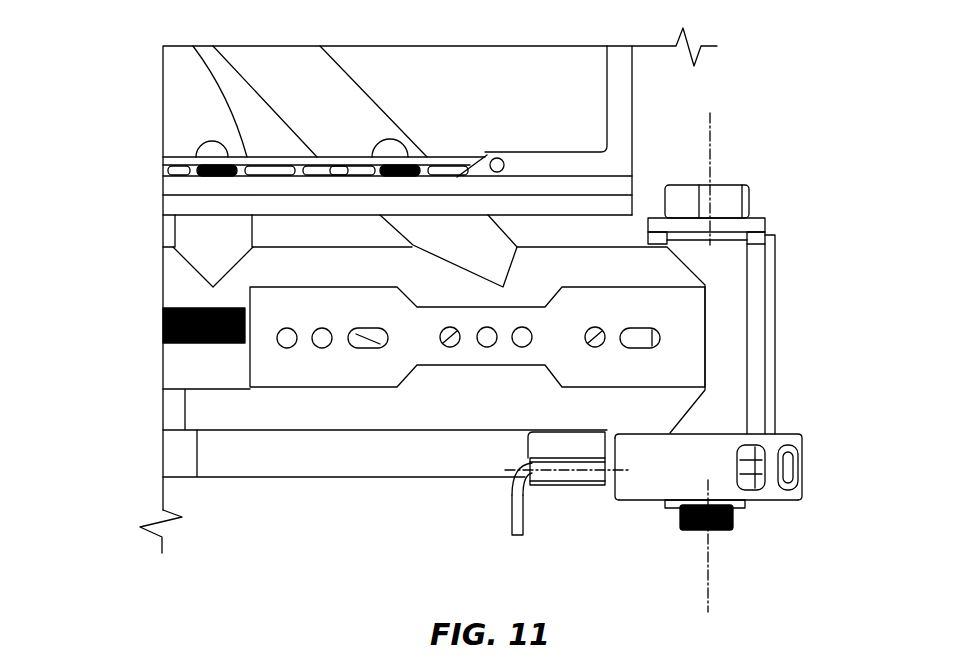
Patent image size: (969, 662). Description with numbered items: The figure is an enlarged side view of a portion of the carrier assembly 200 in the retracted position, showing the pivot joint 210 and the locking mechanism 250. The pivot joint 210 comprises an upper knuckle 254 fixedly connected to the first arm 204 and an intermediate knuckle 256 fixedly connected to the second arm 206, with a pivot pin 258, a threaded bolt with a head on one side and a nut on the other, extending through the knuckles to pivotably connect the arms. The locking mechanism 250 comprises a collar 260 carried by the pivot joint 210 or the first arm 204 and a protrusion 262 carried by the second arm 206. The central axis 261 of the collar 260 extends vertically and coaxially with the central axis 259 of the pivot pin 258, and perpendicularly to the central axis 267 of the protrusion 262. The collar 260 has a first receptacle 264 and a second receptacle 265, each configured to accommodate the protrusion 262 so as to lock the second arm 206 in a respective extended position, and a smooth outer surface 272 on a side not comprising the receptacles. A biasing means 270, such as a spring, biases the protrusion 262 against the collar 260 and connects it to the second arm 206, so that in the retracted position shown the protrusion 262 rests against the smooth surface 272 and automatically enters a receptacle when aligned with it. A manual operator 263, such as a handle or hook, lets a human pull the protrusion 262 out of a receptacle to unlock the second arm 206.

The carrier assembly 200 is at (88, 34).
The first arm 204 is at (385, 479).
The second arm 206 is at (343, 432).
The pivot joint 210 is at (738, 176).
The locking mechanism 250 is at (812, 443).
The upper knuckle 254 is at (765, 225).
The intermediate knuckle 256 is at (748, 352).
The pivot pin 258 is at (693, 525).
The central axis of the pivot pin 259 is at (712, 138).
The collar 260 is at (620, 503).
The central axis of the collar 261 is at (712, 572).
The protrusion 262 is at (505, 483).
The manual operator 263 is at (510, 510).
The first receptacle 264 is at (752, 492).
The second receptacle 265 is at (787, 490).
The central axis of the protrusion 267 is at (577, 470).
The biasing means 270 is at (568, 487).
The smooth outer surface 272 is at (655, 487).